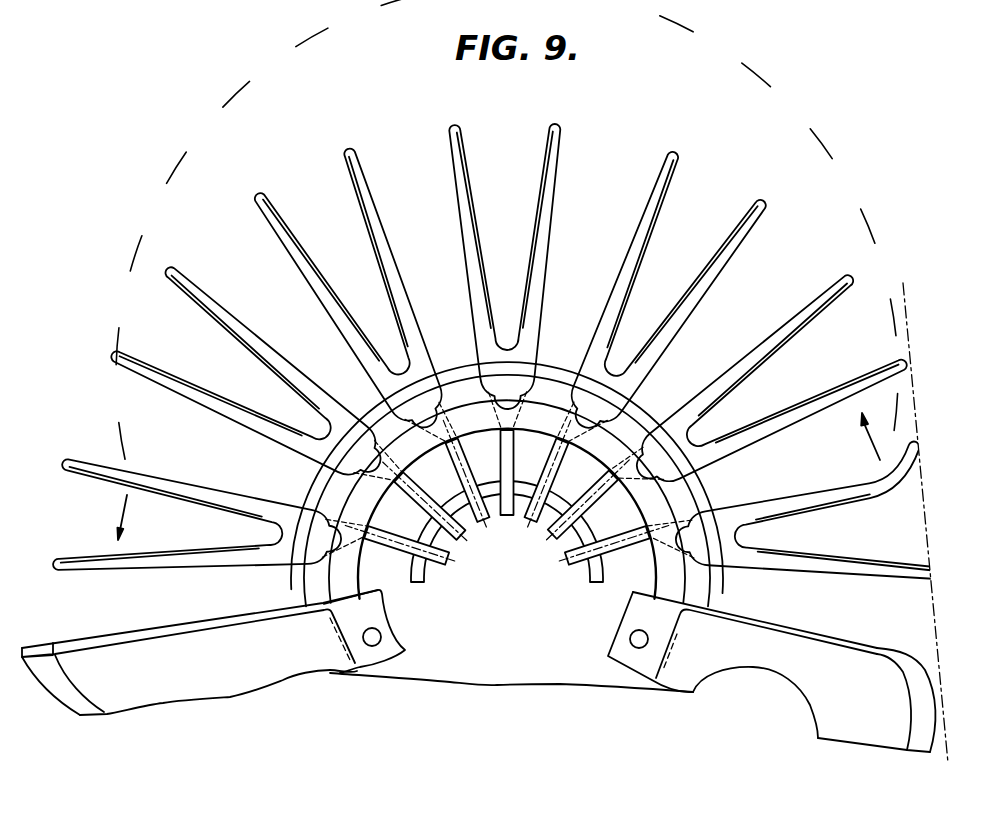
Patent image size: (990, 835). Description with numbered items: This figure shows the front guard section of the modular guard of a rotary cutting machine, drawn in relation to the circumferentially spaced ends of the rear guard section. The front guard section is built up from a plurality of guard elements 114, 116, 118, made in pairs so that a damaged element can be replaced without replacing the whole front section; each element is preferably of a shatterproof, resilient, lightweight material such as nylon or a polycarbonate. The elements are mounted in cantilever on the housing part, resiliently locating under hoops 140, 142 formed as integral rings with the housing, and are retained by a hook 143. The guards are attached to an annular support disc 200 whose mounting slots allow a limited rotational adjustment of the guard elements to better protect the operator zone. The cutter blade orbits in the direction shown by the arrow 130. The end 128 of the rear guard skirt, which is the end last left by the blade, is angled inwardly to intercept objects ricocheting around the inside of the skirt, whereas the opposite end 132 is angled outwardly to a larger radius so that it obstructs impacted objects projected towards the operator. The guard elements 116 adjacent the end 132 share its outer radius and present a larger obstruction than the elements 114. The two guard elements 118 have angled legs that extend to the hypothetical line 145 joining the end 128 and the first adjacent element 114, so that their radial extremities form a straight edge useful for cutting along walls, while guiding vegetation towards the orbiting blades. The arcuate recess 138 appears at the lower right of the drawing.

The guard element 114 is at (557, 158).
The guard element 116 is at (77, 470).
The guard element 118 is at (872, 490).
The end of skirt 128 is at (943, 704).
The arrow 130 is at (128, 512).
The end of rear guard section 132 is at (42, 644).
The arcuate recess 138 is at (788, 688).
The hoop 140 is at (355, 578).
The hoop 142 is at (430, 577).
The hook 143 is at (570, 563).
The hypothetical line 145 is at (918, 346).
The annular support disc 200 is at (500, 674).